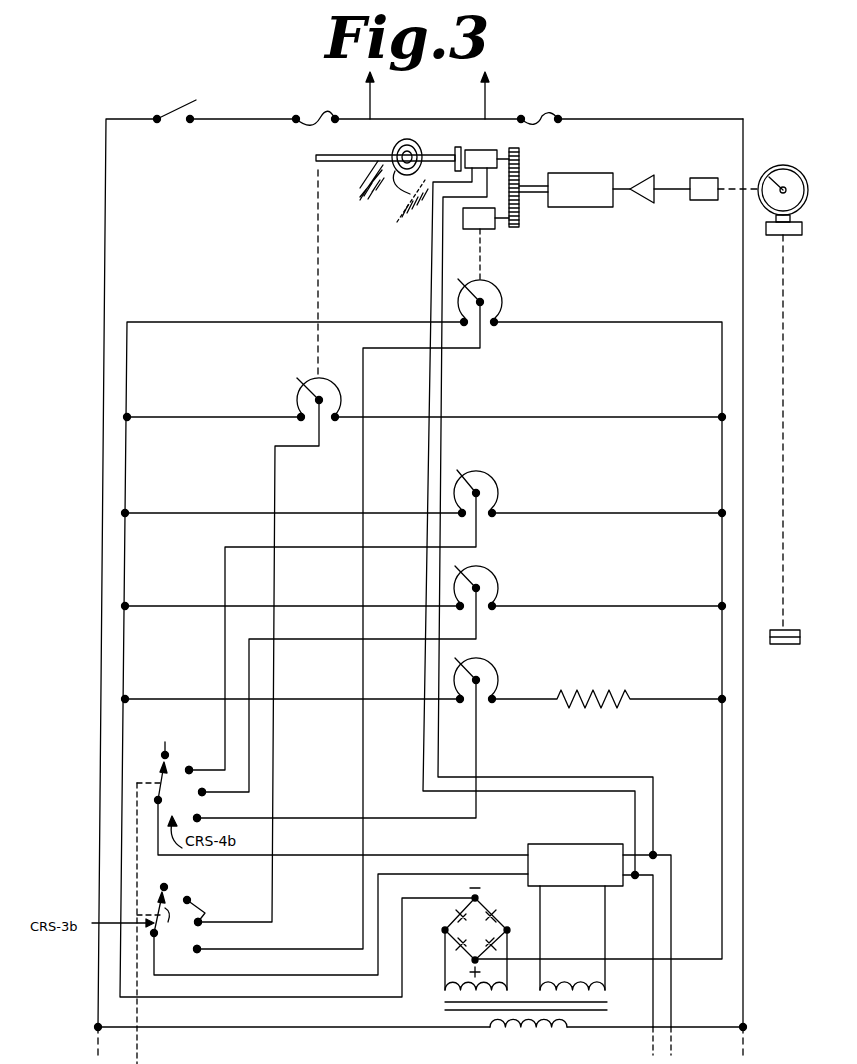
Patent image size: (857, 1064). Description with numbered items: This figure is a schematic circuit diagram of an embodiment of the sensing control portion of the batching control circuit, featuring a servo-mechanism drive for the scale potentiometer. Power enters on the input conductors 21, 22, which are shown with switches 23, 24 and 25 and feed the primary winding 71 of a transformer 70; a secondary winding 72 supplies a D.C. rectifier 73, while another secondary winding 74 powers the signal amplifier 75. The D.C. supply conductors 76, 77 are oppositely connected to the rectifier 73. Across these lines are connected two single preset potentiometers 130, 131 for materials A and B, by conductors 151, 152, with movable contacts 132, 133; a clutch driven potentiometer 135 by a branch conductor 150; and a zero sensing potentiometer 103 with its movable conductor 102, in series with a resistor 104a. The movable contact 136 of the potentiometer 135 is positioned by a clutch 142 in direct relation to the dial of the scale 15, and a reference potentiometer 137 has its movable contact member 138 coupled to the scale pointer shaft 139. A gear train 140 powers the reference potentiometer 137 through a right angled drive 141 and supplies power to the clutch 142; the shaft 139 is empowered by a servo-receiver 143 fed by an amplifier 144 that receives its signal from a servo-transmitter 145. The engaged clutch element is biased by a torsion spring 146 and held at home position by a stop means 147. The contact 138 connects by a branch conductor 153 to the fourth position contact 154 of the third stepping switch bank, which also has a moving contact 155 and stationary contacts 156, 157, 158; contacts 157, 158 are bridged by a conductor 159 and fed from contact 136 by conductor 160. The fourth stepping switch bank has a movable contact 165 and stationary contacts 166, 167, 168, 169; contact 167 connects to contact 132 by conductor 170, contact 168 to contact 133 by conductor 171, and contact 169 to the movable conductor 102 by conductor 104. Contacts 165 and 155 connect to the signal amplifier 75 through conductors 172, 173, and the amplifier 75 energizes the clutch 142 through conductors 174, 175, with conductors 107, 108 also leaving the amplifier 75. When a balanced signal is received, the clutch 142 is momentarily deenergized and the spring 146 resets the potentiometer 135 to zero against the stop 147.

The scale 15 is at (798, 230).
The power input conductor 21 is at (106, 160).
The power input conductor 22 is at (686, 118).
The switch 23 is at (188, 106).
The switch 24 is at (318, 115).
The switch 25 is at (538, 112).
The transformer 70 is at (436, 1008).
The primary winding 71 is at (500, 1034).
The secondary winding 72 is at (446, 984).
The D.C. rectifier 73 is at (452, 918).
The secondary winding 74 is at (580, 982).
The signal amplifier 75 is at (586, 844).
The D.C. supply conductor 76 is at (254, 318).
The D.C. supply conductor 77 is at (642, 318).
The movable conductor 102 is at (482, 664).
The zero sensing potentiometer 103 is at (498, 678).
The conductor 104 is at (318, 816).
The resistor 104a is at (608, 692).
The conductor 107 is at (672, 908).
The conductor 108 is at (652, 912).
The preset potentiometer 130 is at (498, 479).
The preset potentiometer 131 is at (500, 580).
The movable contact 132 is at (460, 470).
The movable contact 133 is at (470, 568).
The clutch driven potentiometer 135 is at (294, 400).
The movable contact 136 is at (306, 376).
The reference potentiometer 137 is at (503, 304).
The movable contact member 138 is at (487, 283).
The scale pointer shaft 139 is at (533, 195).
The gear train 140 is at (520, 180).
The right angled drive 141 is at (478, 238).
The clutch 142 is at (488, 145).
The servo-receiver 143 is at (592, 174).
The amplifier 144 is at (645, 200).
The servo-transmitter 145 is at (708, 177).
The torsion spring 146 is at (398, 142).
The stop means 147 is at (364, 178).
The branch conductor 150 is at (580, 416).
The conductor 151 is at (596, 510).
The conductor 152 is at (622, 606).
The branch conductor 153 is at (483, 345).
The fourth position stationary contact 154 is at (199, 953).
The moving contact 155 is at (163, 918).
The stationary contact 156 is at (164, 884).
The stationary contact 157 is at (188, 896).
The stationary contact 158 is at (200, 926).
The bridging conductor 159 is at (204, 912).
The conductor 160 is at (320, 440).
The movable contact 165 is at (158, 776).
The stationary contact 166 is at (164, 748).
The stationary contact 167 is at (190, 765).
The stationary contact 168 is at (212, 786).
The fourth position contact 169 is at (203, 817).
The conductor 170 is at (330, 544).
The conductor 171 is at (316, 648).
The conductor 172 is at (412, 850).
The conductor 173 is at (326, 976).
The conductor 174 is at (444, 268).
The conductor 175 is at (424, 278).